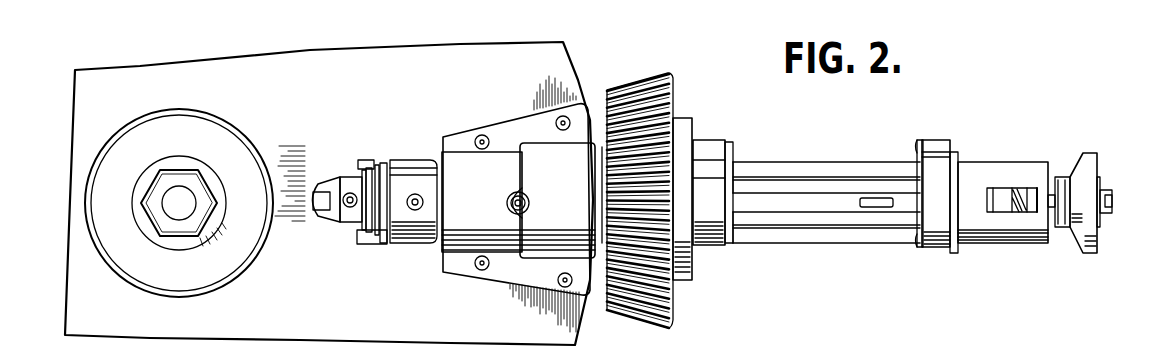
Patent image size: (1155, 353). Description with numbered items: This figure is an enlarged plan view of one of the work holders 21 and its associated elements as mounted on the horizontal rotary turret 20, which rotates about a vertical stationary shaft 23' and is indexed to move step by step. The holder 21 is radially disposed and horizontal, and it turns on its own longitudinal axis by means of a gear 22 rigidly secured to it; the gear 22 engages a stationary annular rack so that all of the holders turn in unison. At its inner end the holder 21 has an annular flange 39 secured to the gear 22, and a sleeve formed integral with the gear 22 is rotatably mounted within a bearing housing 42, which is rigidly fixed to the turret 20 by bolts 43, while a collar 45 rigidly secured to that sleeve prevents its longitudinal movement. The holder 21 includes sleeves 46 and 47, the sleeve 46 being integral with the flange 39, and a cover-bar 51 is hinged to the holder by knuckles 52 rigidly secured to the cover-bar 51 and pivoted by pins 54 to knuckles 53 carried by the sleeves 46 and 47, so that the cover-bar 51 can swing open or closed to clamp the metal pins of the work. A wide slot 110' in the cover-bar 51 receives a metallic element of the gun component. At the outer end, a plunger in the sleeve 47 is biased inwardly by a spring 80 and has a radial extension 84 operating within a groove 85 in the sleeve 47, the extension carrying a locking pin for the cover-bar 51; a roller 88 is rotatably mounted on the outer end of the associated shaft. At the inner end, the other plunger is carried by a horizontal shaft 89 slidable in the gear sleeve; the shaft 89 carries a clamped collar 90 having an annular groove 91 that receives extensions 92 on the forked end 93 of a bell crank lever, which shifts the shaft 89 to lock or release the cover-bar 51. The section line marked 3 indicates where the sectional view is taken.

The rotary turret 20 is at (329, 193).
The vertical stationary shaft 23' is at (179, 195).
The section line 3- 3 is at (188, 205).
The horizontal shaft 89 is at (323, 190).
The collar 90 is at (340, 222).
The annular groove 91 is at (348, 227).
The extensions 92 is at (378, 165).
The forked end 93 is at (362, 165).
The collar 45 is at (415, 168).
The bolts 43 is at (480, 136).
The bearing housing 42 is at (522, 200).
The gear 22 is at (670, 113).
The annular flange 39 is at (693, 278).
The knuckles 53 is at (708, 142).
The sleeve 46 is at (707, 233).
The sleeve 47 is at (940, 243).
The pins 54 is at (735, 147).
The knuckles 52 is at (730, 172).
The work holder 21 is at (823, 157).
The cover-bar 51 is at (817, 207).
The wide slot 110' is at (884, 232).
The spring 80 is at (1025, 212).
The radial extension 84 is at (1007, 193).
The groove 85 is at (1030, 190).
The roller 88 is at (1087, 172).